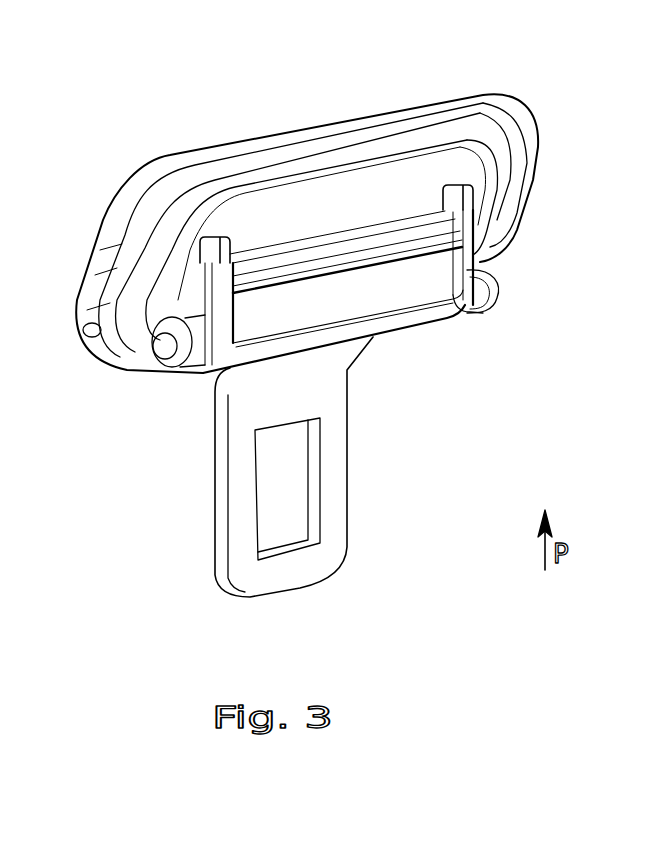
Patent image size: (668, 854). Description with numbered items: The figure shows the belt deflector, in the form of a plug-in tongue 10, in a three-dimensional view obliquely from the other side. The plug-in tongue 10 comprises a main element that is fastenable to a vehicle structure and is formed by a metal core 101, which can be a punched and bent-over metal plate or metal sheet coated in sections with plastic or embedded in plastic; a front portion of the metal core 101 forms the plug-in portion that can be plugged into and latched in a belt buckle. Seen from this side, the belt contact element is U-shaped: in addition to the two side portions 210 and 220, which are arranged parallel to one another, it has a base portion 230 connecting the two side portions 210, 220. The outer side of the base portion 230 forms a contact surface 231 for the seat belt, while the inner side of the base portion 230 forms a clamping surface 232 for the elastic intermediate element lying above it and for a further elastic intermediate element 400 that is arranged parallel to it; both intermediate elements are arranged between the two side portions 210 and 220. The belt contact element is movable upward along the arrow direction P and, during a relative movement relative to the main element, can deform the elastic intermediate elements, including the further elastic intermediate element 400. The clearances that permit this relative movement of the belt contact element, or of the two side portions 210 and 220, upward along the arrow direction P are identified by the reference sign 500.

The plug-in tongue 10 is at (530, 170).
The metal core 101 is at (340, 477).
The side portion 210 is at (222, 313).
The side portion 220 is at (467, 280).
The base portion 230 is at (447, 317).
The contact surface 231 is at (408, 330).
The clamping surface 232 is at (382, 314).
The further elastic intermediate element 400 is at (312, 313).
The clearances 500 is at (210, 243).